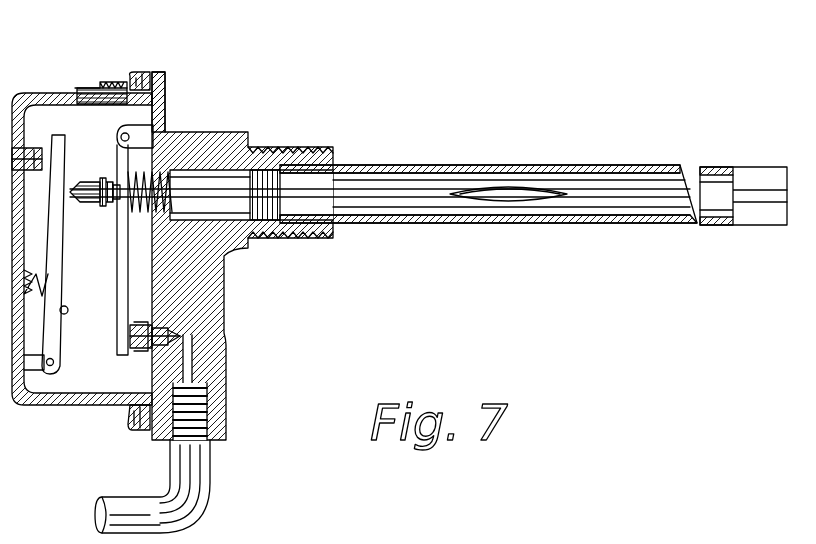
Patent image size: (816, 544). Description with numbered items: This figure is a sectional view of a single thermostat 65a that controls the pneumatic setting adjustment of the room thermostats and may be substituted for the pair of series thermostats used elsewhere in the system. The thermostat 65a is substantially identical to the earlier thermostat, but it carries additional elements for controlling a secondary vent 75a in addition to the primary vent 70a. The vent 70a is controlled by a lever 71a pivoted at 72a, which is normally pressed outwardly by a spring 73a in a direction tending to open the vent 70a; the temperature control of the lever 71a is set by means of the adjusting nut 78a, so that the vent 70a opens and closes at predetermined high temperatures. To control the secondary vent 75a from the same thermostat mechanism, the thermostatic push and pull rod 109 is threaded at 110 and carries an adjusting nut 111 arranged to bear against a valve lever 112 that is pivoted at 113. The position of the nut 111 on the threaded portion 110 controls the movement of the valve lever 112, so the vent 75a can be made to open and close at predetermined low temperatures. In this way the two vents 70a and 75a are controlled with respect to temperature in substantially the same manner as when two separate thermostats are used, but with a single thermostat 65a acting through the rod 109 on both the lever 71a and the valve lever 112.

The thermostat 65a is at (170, 82).
The vent 70a is at (153, 332).
The lever 71a is at (125, 265).
The pivot 72a is at (128, 136).
The spring 73a is at (150, 165).
The secondary vent 75a is at (36, 148).
The adjusting nut 78a is at (113, 182).
The thermostatic push and pull rod 109 is at (493, 183).
The threaded portion 110 is at (103, 180).
The adjusting nut 111 is at (97, 178).
The valve lever 112 is at (55, 335).
The pivot 113 is at (50, 366).